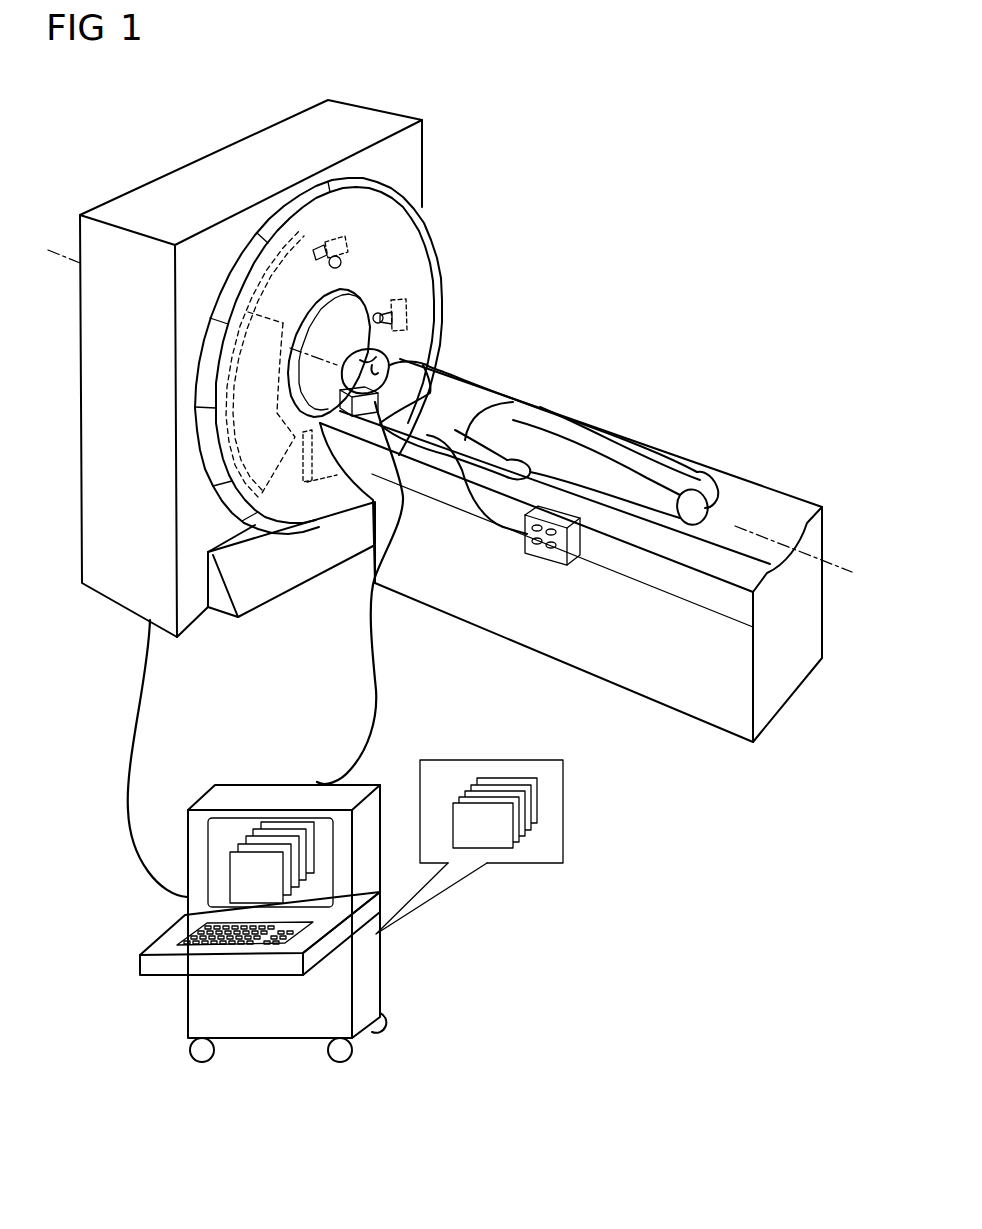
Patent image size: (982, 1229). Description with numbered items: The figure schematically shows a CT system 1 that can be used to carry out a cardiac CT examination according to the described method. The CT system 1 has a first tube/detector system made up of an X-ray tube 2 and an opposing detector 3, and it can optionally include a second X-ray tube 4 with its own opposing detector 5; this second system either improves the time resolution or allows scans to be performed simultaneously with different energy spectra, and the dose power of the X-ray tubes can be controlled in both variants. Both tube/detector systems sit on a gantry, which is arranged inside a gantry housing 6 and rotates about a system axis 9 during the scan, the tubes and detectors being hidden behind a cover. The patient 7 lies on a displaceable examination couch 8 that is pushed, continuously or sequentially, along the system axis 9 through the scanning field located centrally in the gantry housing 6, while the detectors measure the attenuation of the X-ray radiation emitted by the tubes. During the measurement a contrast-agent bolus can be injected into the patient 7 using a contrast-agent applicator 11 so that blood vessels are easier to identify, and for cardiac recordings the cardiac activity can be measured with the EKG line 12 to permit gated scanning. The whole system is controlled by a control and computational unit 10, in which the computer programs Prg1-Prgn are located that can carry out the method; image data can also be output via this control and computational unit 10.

The CT system 1 is at (613, 316).
The X-ray tube 2 is at (348, 243).
The detector 3 is at (316, 470).
The second X-ray tube 4 is at (407, 312).
The detector 5 is at (263, 468).
The gantry housing 6 is at (123, 576).
The patient 7 is at (450, 392).
The displaceable examination couch 8 is at (697, 697).
The system axis 9 is at (835, 567).
The control and computational unit 10 is at (373, 977).
The contrast-agent applicator 11 is at (563, 556).
The EKG line 12 is at (375, 722).
The computer programs Prg1-Prgn is at (500, 848).